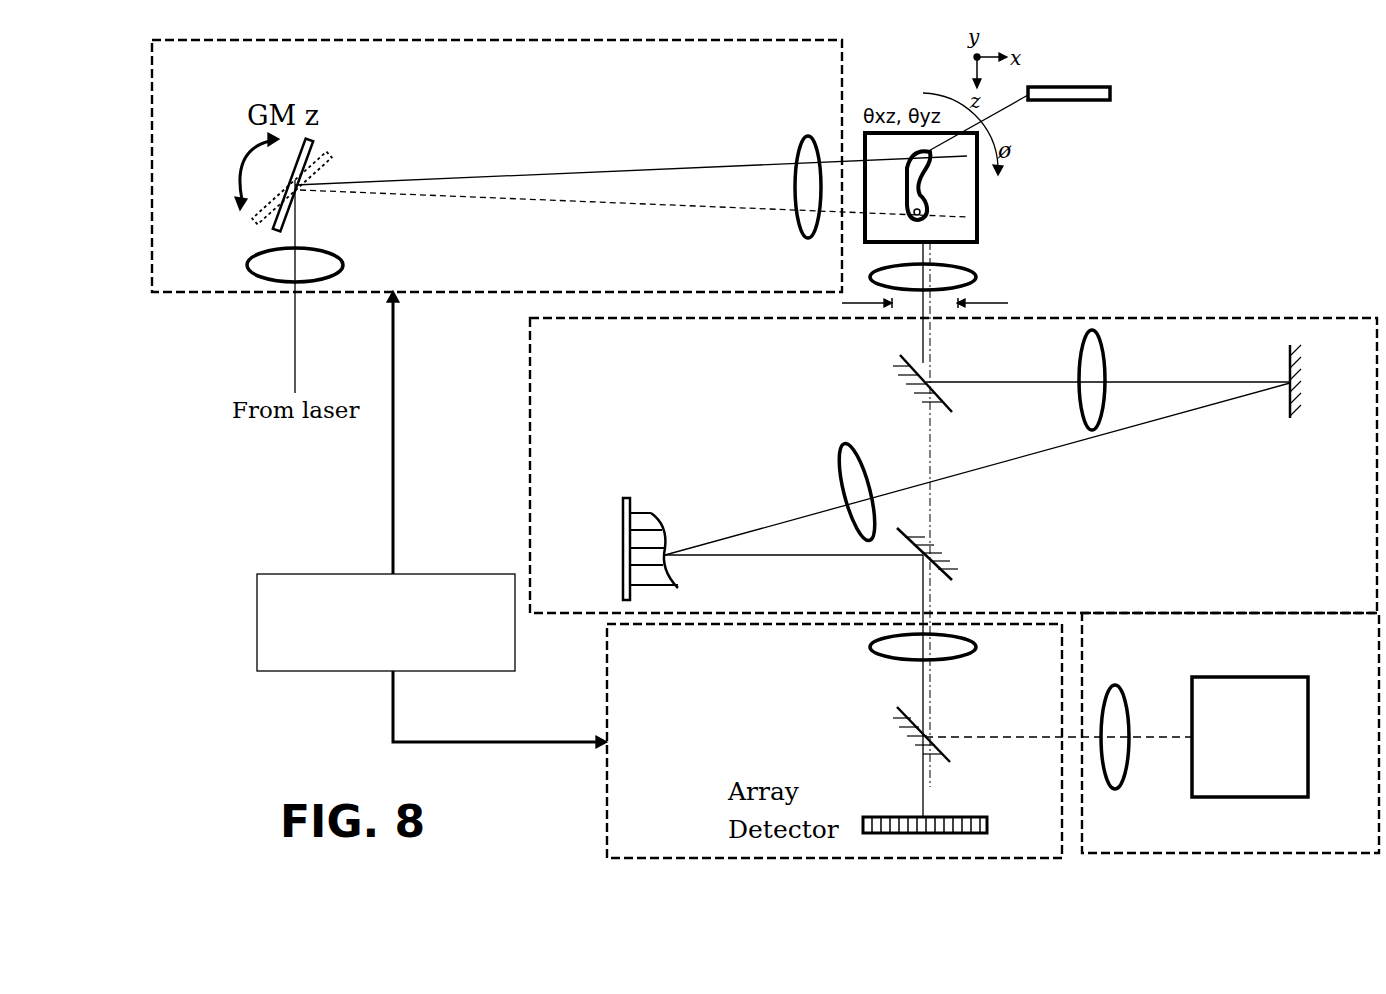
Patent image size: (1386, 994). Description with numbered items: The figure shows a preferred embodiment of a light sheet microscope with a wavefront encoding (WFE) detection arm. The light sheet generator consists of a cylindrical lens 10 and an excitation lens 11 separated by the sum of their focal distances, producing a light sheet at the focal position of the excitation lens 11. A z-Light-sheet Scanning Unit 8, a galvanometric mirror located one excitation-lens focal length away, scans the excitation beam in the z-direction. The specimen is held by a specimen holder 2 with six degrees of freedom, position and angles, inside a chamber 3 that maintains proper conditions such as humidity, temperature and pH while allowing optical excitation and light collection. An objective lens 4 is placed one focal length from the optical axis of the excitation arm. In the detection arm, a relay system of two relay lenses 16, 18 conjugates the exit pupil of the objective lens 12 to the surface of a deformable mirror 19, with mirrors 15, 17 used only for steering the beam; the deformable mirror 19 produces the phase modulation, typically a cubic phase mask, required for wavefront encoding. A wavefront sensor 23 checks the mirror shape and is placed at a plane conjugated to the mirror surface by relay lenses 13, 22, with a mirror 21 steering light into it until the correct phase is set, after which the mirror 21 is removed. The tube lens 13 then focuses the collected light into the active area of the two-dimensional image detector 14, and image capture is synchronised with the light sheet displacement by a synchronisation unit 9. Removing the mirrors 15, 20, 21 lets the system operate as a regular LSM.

The specimen holder 2 is at (1106, 101).
The chamber 3 is at (967, 197).
The objective lens 4 is at (965, 277).
The z-Light-sheet Scanning Unit 8 is at (287, 193).
The synchronisation unit 9 is at (278, 643).
The cylindrical lens 10 is at (258, 282).
The excitation lens 11 is at (806, 225).
The exit pupil of the objective lens 12 is at (940, 304).
The tube lens 13 is at (880, 661).
The 2D image detector 14 is at (963, 816).
The mirror 15 is at (915, 383).
The relay lens 16 is at (1076, 405).
The mirror 17 is at (1312, 381).
The relay lens 18 is at (836, 462).
The deformable mirror 19 is at (622, 531).
The mirror 20 is at (936, 554).
The mirror 21 is at (909, 734).
The relay lens 22 is at (1126, 700).
The wavefront sensor 23 is at (1260, 677).